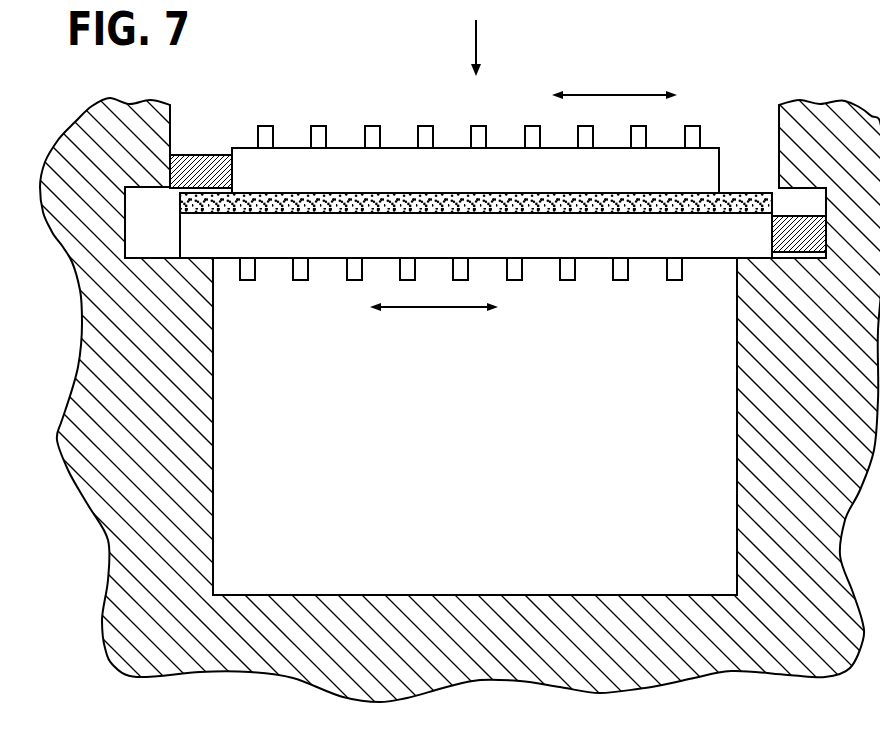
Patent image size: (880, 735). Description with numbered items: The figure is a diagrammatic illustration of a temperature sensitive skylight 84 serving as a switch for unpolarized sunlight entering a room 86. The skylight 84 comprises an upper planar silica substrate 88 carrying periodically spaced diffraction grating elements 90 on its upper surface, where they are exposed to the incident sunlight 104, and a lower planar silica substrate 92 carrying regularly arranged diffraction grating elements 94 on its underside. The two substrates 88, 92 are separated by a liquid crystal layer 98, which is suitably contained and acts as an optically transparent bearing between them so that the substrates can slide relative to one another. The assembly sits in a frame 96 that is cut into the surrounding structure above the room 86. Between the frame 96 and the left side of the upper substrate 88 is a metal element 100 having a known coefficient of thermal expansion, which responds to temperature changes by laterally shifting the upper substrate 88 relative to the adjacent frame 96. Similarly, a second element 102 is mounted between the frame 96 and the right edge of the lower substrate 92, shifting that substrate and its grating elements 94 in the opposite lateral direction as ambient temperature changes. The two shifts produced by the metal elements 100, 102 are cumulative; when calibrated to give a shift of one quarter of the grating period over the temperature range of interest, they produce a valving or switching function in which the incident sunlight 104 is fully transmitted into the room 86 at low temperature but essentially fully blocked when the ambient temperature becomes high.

The temperature sensitive skylight 84 is at (386, 45).
The room 86 is at (213, 537).
The upper planar SiO2 substrate 88 is at (286, 147).
The diffraction grating elements 90 is at (425, 125).
The lower planar SiO2 substrate 92 is at (537, 258).
The diffraction grating elements 94 is at (301, 281).
The frame 96 is at (125, 212).
The liquid crystal layer 98 is at (690, 203).
The metal element 100 is at (200, 163).
The second element 102 is at (797, 233).
The incident sunlight 104 is at (476, 45).